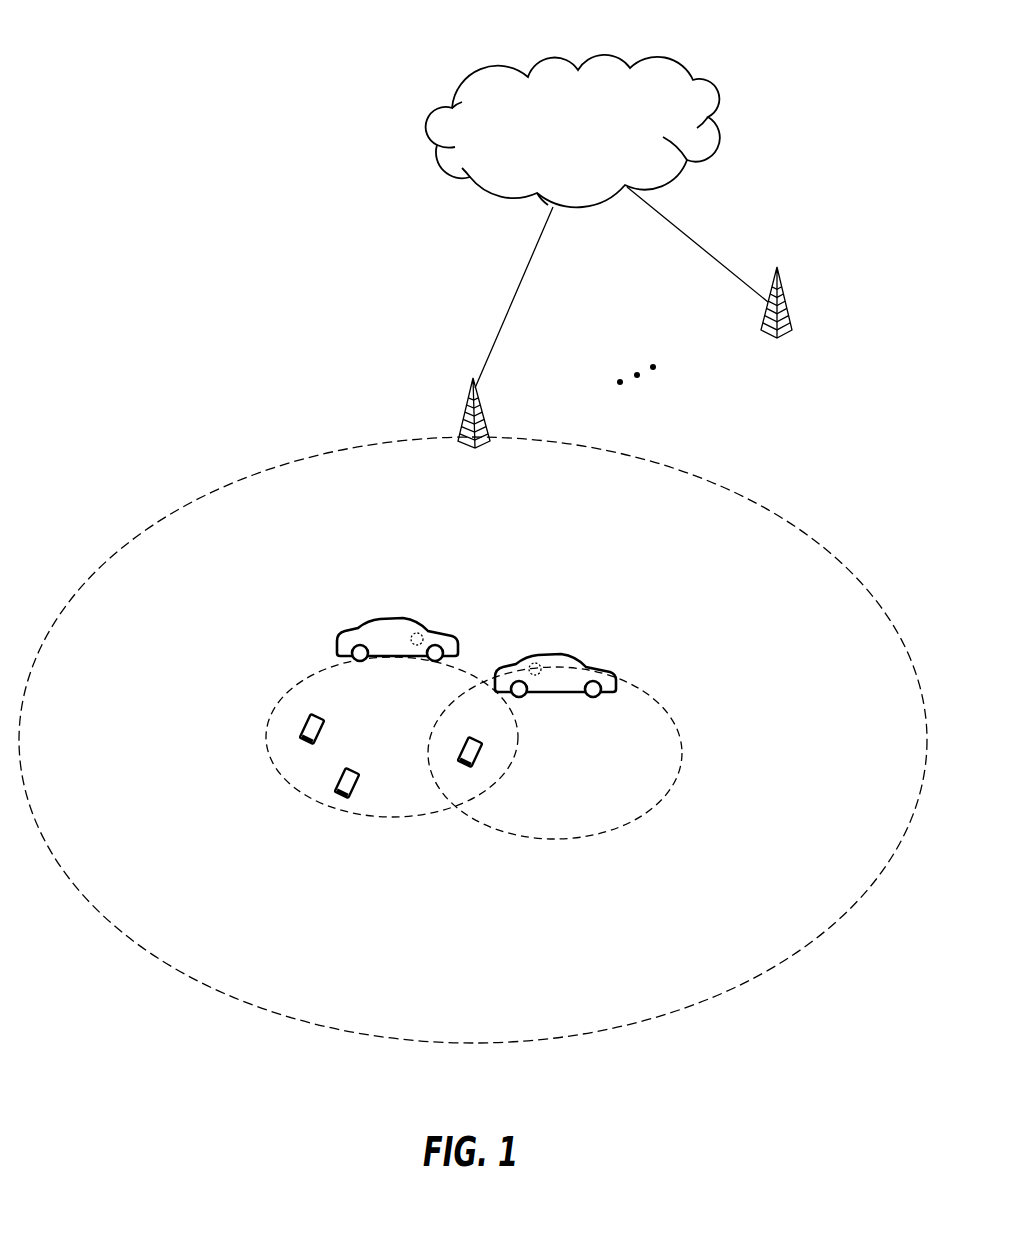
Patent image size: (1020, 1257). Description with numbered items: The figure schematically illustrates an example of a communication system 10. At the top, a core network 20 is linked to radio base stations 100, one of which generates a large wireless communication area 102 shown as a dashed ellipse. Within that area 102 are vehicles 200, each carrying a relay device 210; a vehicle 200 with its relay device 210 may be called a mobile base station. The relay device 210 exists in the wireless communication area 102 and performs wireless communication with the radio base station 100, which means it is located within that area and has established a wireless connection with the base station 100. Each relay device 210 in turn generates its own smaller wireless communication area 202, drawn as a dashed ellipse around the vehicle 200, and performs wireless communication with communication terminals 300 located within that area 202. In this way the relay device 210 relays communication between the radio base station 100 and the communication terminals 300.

The communication system 10 is at (177, 31).
The core network 20 is at (712, 85).
The radio base station 100 is at (487, 414).
The wireless communication area 102 is at (806, 530).
The vehicle 200 is at (342, 631).
The wireless communication area 202 is at (406, 818).
The relay device 210 is at (411, 637).
The communication terminal 300 is at (327, 714).